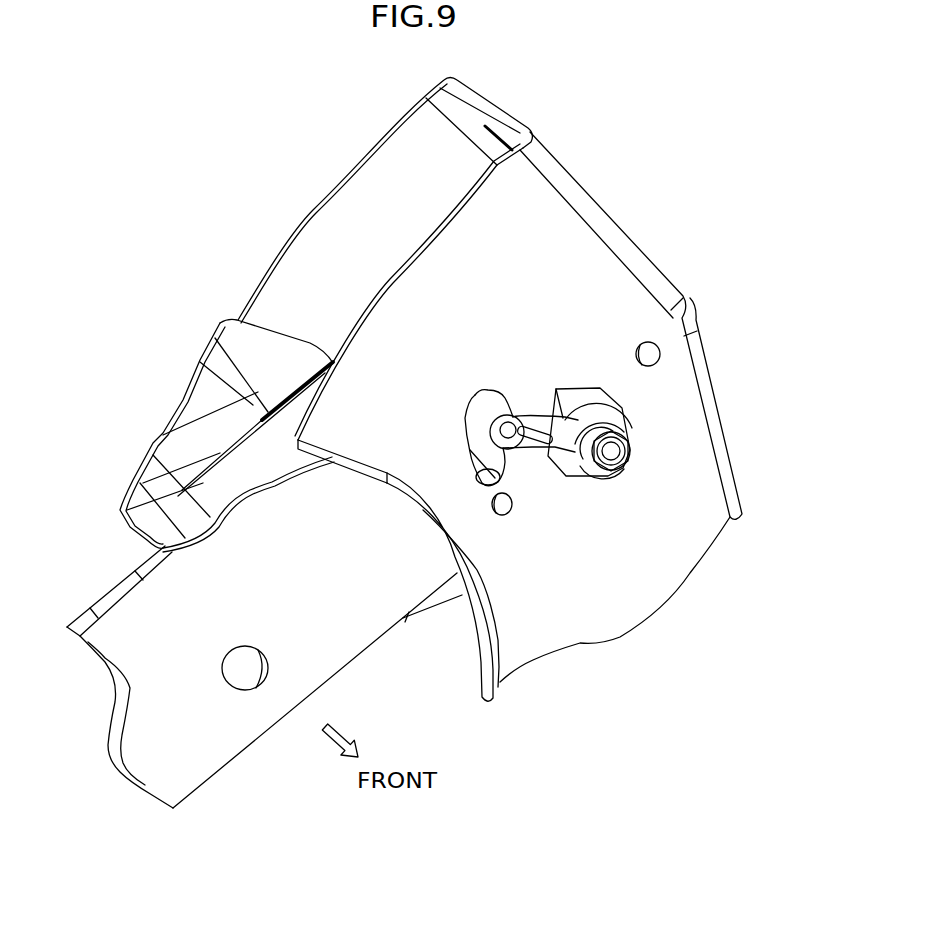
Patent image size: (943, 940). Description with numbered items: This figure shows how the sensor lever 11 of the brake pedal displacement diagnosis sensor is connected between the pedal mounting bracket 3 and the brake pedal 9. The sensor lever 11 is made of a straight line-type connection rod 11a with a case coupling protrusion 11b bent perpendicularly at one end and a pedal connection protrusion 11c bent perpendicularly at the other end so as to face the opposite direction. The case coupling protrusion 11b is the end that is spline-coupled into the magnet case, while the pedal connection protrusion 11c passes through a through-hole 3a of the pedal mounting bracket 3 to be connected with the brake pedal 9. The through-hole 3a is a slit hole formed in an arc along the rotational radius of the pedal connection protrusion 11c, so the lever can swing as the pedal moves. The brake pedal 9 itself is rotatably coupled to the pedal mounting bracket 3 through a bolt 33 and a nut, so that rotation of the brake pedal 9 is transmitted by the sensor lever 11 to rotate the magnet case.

The pedal mounting bracket 3 is at (588, 203).
The through-hole 3a is at (503, 516).
The brake pedal 9 is at (230, 745).
The sensor lever 11 is at (632, 487).
The connection rod 11a is at (533, 447).
The case coupling protrusion 11b is at (630, 426).
The pedal connection protrusion 11c is at (480, 413).
The bolt 33 is at (590, 390).